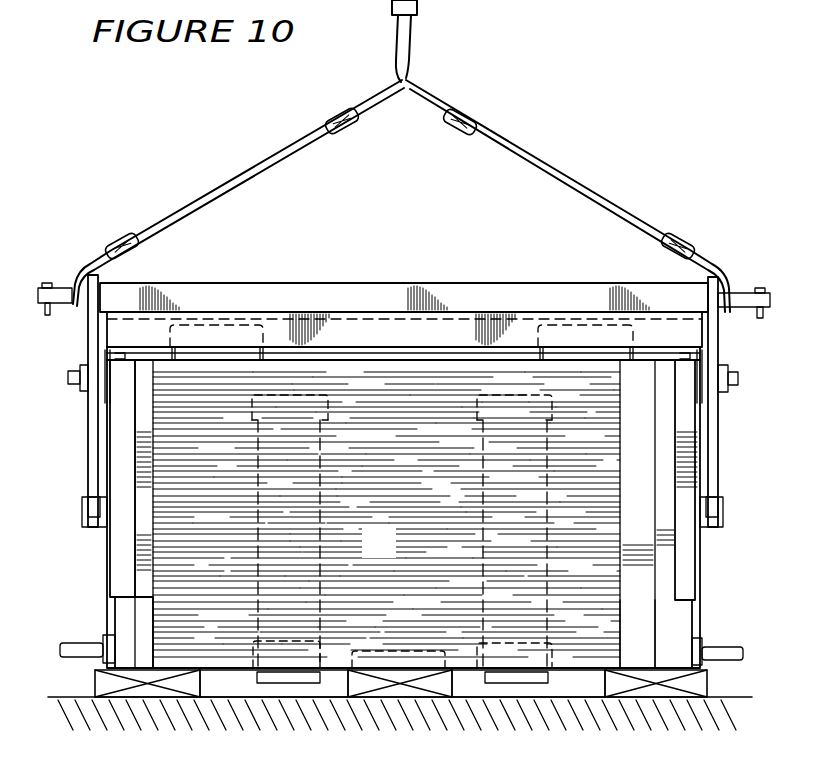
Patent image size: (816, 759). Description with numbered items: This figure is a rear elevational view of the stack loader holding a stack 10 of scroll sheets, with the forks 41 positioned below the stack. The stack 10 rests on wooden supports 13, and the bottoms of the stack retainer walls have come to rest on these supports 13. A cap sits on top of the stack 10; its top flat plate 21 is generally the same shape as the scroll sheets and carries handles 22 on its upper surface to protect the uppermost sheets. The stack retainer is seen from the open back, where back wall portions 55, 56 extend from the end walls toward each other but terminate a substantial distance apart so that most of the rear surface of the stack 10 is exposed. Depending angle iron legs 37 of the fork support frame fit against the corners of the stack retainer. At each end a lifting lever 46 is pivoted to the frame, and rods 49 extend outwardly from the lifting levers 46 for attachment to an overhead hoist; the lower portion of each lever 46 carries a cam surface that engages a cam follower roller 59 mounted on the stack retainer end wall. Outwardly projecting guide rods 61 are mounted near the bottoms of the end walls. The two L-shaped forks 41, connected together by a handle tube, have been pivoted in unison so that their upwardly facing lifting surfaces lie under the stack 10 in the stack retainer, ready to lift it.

The stack 10 is at (393, 557).
The wooden supports 13 is at (143, 690).
The top flat plate 21 is at (343, 353).
The handles 22 is at (212, 322).
The depending angle iron legs 37 is at (118, 568).
The forks 41 is at (293, 675).
The lifting lever 46 is at (92, 443).
The rods 49 is at (61, 297).
The back wall portion 55 is at (635, 572).
The back wall portion 56 is at (125, 623).
The cam follower roller 59 is at (92, 528).
The guide rods 61 is at (85, 655).